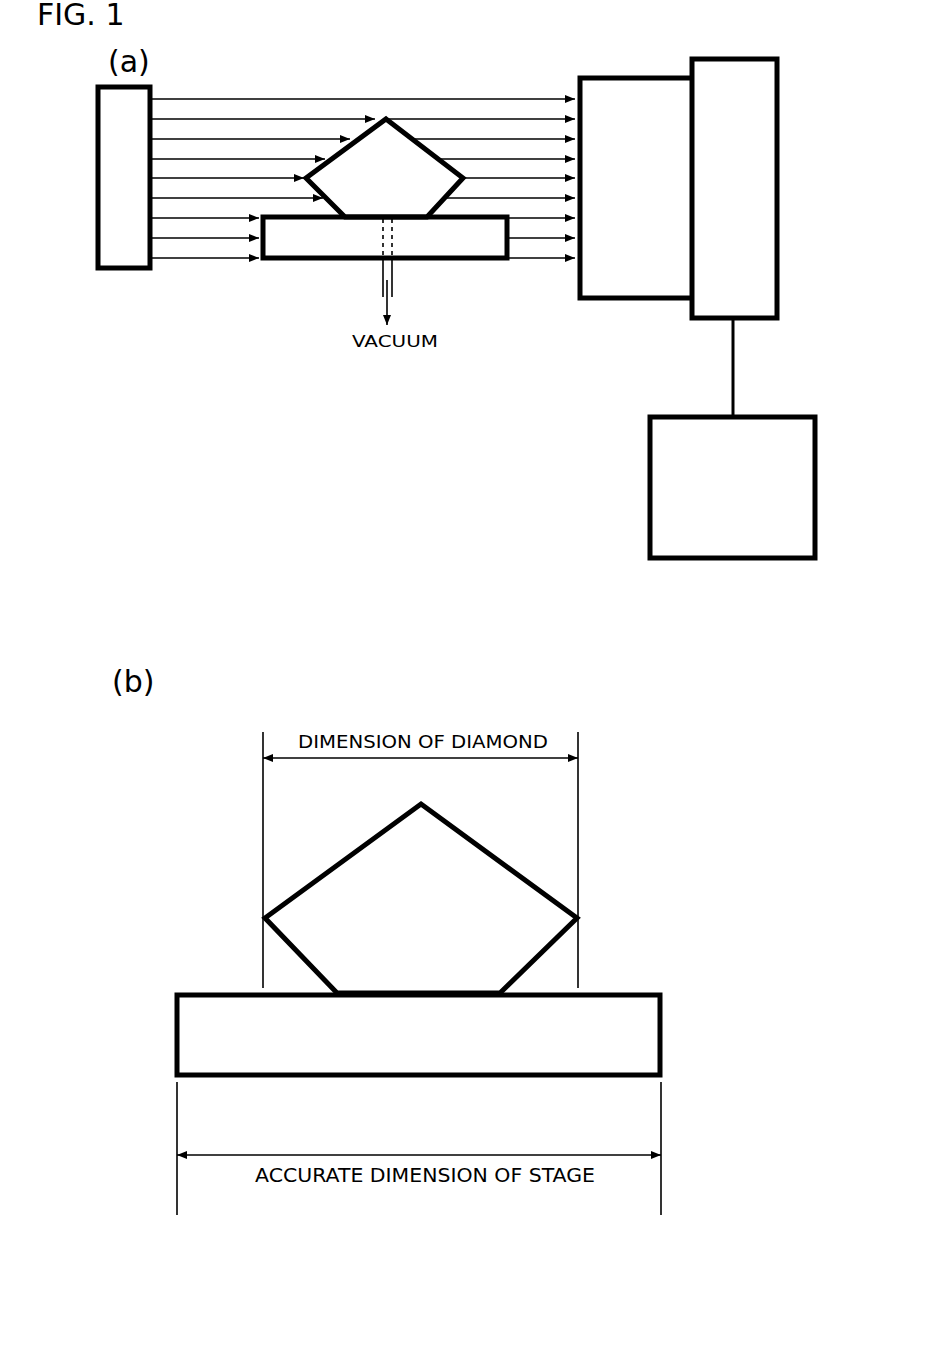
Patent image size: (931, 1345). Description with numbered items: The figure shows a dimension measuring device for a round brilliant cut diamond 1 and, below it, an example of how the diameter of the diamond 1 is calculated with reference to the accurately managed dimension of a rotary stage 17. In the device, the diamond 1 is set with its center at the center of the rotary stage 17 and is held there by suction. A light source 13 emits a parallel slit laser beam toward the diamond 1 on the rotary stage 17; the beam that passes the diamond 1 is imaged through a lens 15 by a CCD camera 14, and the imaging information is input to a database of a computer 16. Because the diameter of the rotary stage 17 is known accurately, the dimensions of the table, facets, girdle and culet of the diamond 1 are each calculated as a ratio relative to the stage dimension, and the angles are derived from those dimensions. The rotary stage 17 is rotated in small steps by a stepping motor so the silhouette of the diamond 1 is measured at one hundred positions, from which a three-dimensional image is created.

The round brilliant cut diamond 1 is at (330, 183).
The light source 13 is at (122, 258).
The CCD camera 14 is at (715, 250).
The lens 15 is at (595, 275).
The computer 16 is at (675, 513).
The rotary stage 17 is at (338, 247).